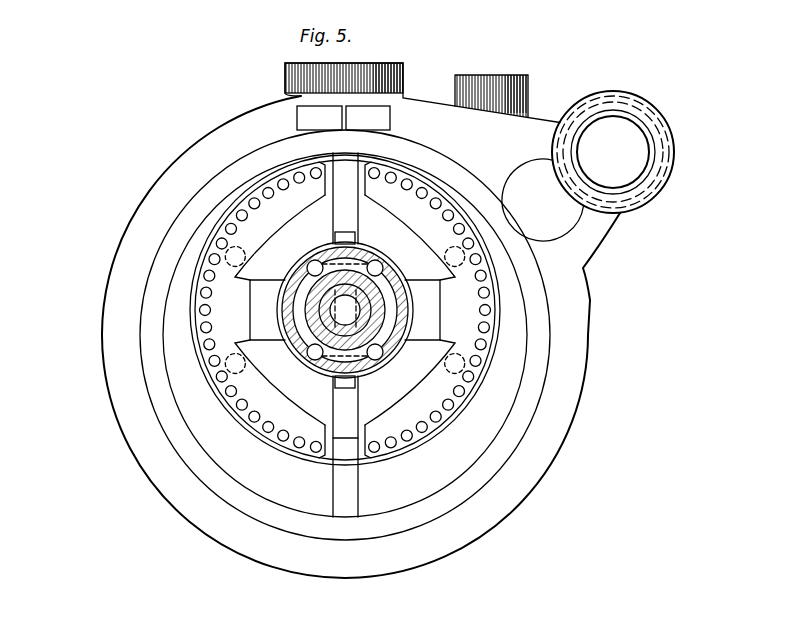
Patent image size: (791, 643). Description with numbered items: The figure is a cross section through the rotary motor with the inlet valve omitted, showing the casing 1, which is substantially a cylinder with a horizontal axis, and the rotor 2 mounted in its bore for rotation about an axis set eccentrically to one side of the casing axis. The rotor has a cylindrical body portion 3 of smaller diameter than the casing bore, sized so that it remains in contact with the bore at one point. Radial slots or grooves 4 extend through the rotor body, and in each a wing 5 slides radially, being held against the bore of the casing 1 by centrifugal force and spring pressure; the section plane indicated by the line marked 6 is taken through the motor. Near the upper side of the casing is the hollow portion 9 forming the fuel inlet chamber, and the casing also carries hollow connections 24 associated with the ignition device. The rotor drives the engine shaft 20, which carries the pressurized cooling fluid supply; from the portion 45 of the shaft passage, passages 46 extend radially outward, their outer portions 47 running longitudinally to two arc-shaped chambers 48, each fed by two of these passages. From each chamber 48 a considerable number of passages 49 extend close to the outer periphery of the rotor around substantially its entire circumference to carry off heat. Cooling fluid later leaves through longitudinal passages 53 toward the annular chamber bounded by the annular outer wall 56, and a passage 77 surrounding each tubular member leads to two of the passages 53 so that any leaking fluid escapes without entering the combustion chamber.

The casing 1 is at (323, 566).
The rotor 2 is at (293, 400).
The body portion 3 is at (370, 223).
The radial slots or grooves 4 is at (352, 407).
The wing 5 is at (325, 195).
The section line 6 is at (178, 97).
The hollow portion (fuel inlet) 9 is at (637, 162).
The engine shaft 20 is at (345, 310).
The hollow connections 24 is at (527, 110).
The portion of the passage 45 is at (500, 160).
The passages 46 is at (272, 265).
The outer portions of the passages 47 is at (300, 272).
The arc-shaped chambers 48 is at (305, 326).
The passages 49 is at (424, 441).
The passages 53 is at (307, 257).
The annular outer wall 56 is at (398, 358).
The passage 77 is at (330, 240).